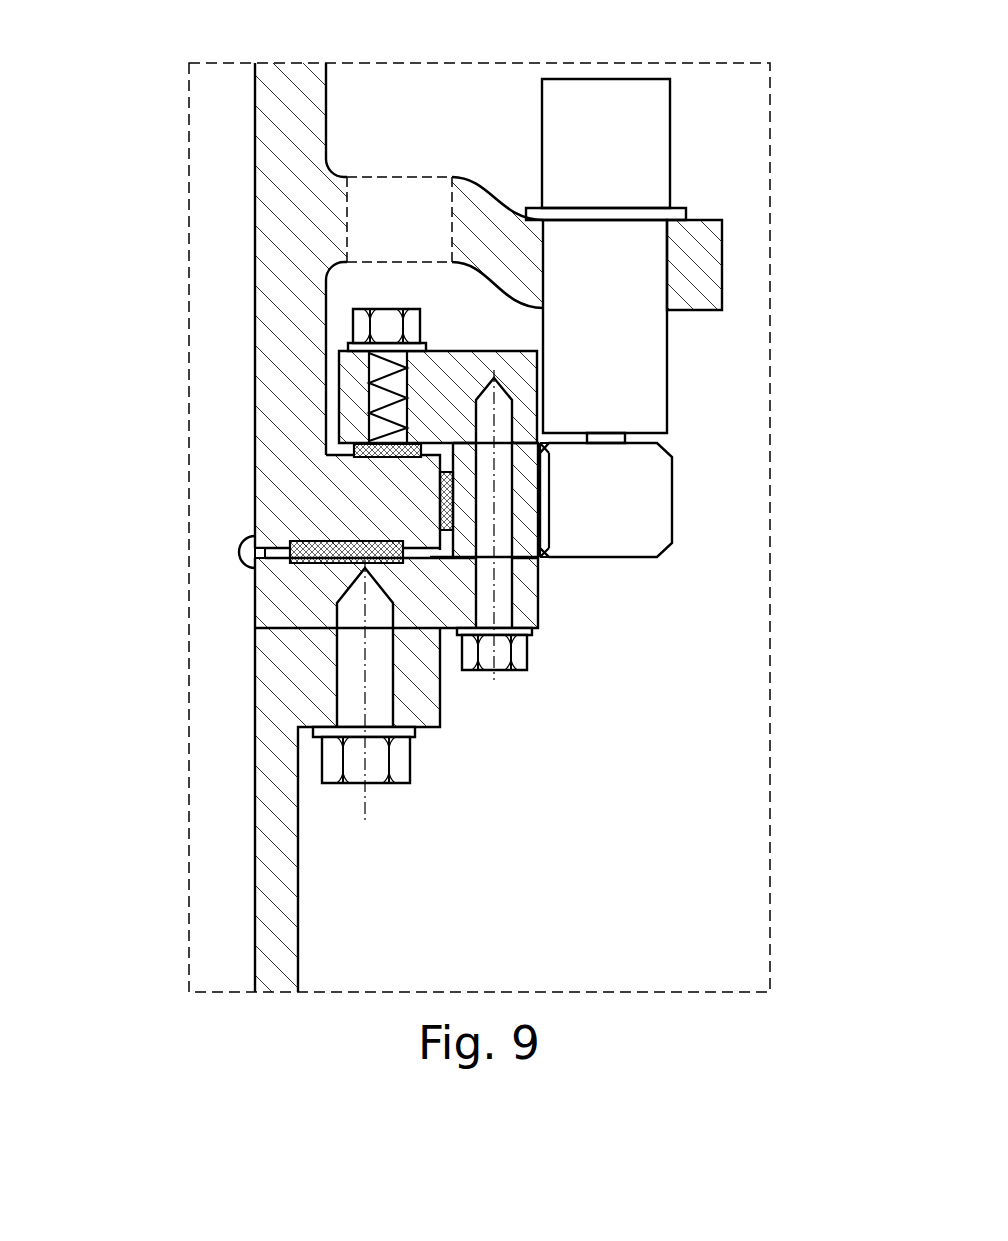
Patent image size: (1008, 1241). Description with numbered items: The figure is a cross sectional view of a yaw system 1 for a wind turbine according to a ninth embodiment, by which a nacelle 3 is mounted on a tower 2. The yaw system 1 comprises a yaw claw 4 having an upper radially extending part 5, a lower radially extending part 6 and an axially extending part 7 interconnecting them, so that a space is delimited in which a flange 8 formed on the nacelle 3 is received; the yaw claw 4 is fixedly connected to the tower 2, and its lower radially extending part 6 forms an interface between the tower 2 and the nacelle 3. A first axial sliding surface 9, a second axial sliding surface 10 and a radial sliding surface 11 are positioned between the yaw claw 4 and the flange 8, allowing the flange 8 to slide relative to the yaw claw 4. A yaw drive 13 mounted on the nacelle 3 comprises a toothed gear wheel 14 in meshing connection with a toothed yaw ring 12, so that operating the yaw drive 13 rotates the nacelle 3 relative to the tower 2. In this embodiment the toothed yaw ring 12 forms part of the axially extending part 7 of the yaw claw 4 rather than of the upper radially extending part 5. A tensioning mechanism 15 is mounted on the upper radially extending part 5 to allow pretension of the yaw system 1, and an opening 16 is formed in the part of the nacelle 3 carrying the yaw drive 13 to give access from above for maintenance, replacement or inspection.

The yaw system 1 is at (156, 448).
The tower 2 is at (268, 830).
The nacelle 3 is at (270, 268).
The yaw claw 4 is at (556, 601).
The upper radially extending part 5 is at (447, 378).
The lower radially extending part 6 is at (420, 600).
The axially extending part 7 is at (467, 530).
The flange 8 is at (383, 517).
The first axial sliding surface 9 is at (373, 447).
The second axial sliding surface 10 is at (330, 553).
The radial sliding surface 11 is at (445, 502).
The toothed yaw ring 12 is at (528, 495).
The yaw drive 13 is at (617, 139).
The toothed gear wheel 14 is at (615, 490).
The tensioning mechanism 15 is at (387, 325).
The opening 16 is at (393, 188).